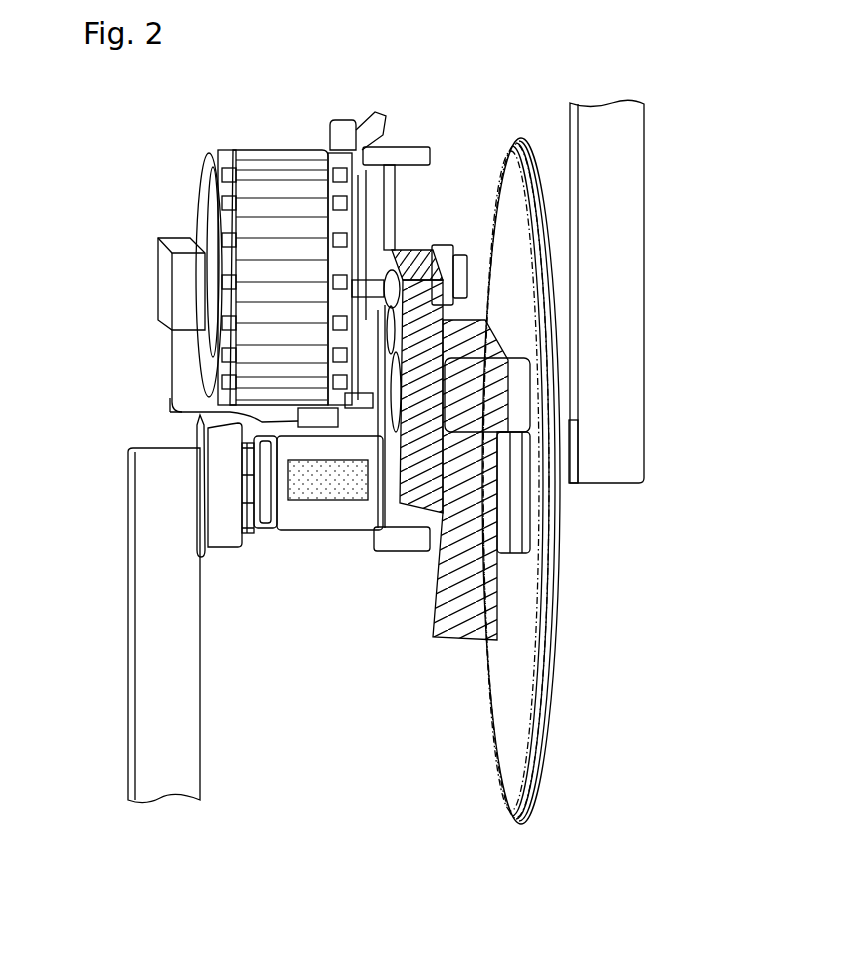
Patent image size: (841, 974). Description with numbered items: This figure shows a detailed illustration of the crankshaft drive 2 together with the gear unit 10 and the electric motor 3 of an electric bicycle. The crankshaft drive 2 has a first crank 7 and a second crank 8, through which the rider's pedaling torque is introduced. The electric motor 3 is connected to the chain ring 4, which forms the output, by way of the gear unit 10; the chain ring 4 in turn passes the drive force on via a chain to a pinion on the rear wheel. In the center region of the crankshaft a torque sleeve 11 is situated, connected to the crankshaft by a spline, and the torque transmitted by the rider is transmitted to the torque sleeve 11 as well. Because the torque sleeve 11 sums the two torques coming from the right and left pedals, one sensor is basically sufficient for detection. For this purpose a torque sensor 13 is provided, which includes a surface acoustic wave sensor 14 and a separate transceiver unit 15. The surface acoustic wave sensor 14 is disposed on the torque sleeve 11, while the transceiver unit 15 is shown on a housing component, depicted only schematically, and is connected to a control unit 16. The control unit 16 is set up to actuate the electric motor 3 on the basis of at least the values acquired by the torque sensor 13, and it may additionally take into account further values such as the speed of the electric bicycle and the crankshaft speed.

The crankshaft drive 2 is at (253, 535).
The electric motor 3 is at (277, 150).
The chain ring 4 is at (540, 718).
The first crank 7 is at (135, 672).
The second crank 8 is at (625, 141).
The gear unit 10 is at (477, 312).
The torque sleeve 11 is at (287, 516).
The torque sensor 13 is at (197, 434).
The surface acoustic wave sensor 14 is at (348, 480).
The transceiver unit 15 is at (322, 428).
The control unit 16 is at (158, 270).